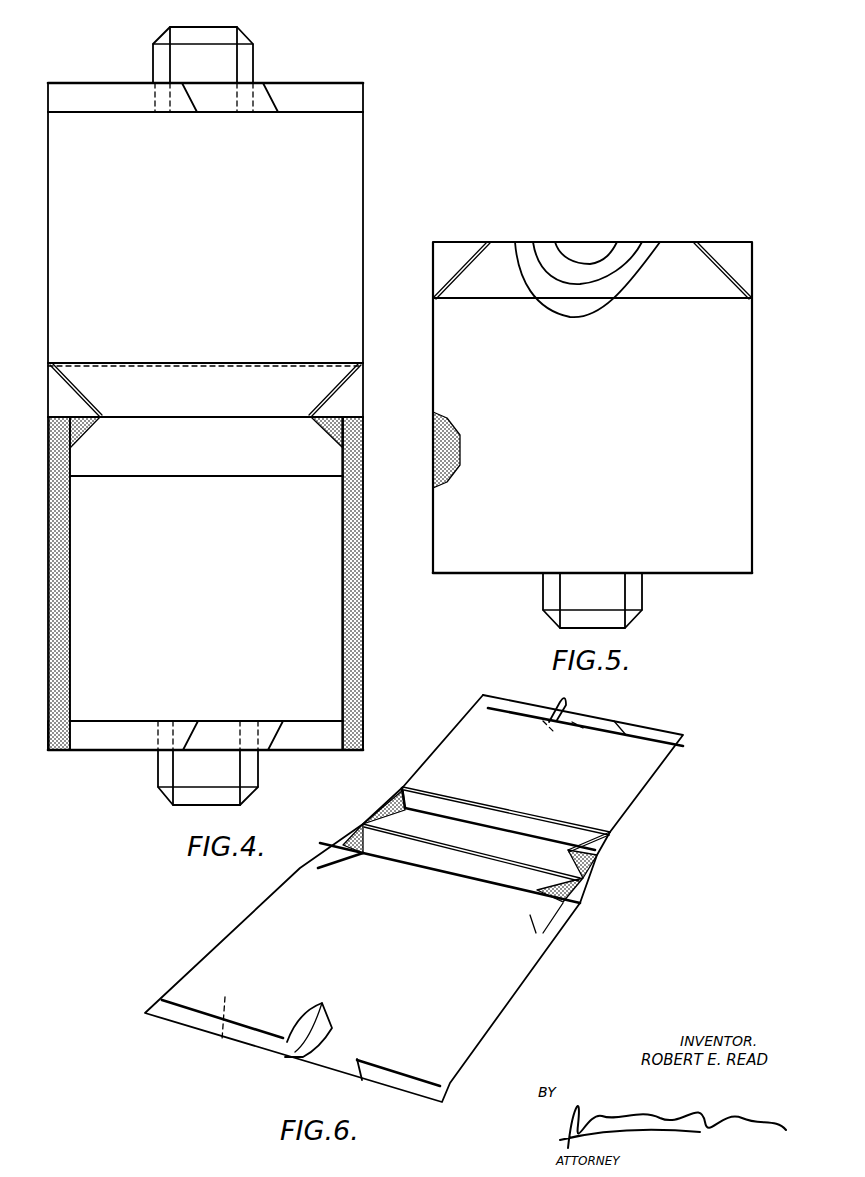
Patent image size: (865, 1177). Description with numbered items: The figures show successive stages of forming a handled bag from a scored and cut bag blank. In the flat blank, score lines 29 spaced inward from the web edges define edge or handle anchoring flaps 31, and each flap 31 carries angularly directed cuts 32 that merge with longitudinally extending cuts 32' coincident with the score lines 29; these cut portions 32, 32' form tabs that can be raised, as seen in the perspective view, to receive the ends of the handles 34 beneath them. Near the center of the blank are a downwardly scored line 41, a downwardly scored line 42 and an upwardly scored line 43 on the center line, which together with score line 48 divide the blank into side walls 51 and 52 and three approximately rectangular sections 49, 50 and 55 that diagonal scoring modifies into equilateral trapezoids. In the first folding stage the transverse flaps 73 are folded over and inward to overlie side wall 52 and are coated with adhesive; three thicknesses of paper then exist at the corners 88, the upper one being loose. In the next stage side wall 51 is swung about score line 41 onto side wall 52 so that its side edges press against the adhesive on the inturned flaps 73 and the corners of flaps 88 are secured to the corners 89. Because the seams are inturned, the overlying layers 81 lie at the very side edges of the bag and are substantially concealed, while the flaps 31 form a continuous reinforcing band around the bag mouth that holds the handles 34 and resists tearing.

In FIG. 4, the score lines 29 is at (86, 84).
In FIG. 5, the score lines 29 is at (470, 575).
In FIG. 4, the edge or handle anchoring flaps 31 is at (308, 95).
In FIG. 6, the edge or handle anchoring flaps 31 is at (633, 731).
In FIG. 4, the angularly directed cuts 32 is at (237, 416).
In FIG. 6, the angularly directed cuts 32 is at (447, 904).
In FIG. 6, the longitudinally extending cuts 32' is at (541, 742).
In FIG. 4, the handles 34 is at (257, 32).
In FIG. 5, the handles 34 is at (648, 625).
In FIG. 4, the downwardly scored line 41 is at (202, 417).
In FIG. 5, the downwardly scored line 41 is at (722, 241).
In FIG. 6, the downwardly scored line 41 is at (529, 840).
In FIG. 5, the downwardly scored line 42 is at (594, 248).
In FIG. 6, the downwardly scored line 42 is at (503, 885).
In FIG. 4, the upwardly scored line 43 is at (182, 478).
In FIG. 5, the upwardly scored line 43 is at (573, 299).
In FIG. 6, the upwardly scored line 43 is at (528, 868).
In FIG. 4, the score line 48 is at (206, 362).
In FIG. 5, the score line 48 is at (665, 300).
In FIG. 6, the score line 48 is at (556, 822).
In FIG. 5, the rectangular section 49 is at (547, 247).
In FIG. 5, the rectangular section 50 is at (643, 252).
In FIG. 4, the side wall 51 is at (205, 237).
In FIG. 5, the side wall 51 is at (592, 407).
In FIG. 6, the side wall 51 is at (543, 763).
In FIG. 4, the side wall 52 is at (206, 583).
In FIG. 5, the side wall 52 is at (584, 241).
In FIG. 6, the side wall 52 is at (377, 944).
In FIG. 5, the rectangular section 55 is at (672, 258).
In FIG. 4, the flaps 73 is at (62, 660).
In FIG. 5, the overlying layers 81 is at (433, 451).
In FIG. 4, the corners 88 is at (366, 738).
In FIG. 4, the corners 89 is at (56, 101).